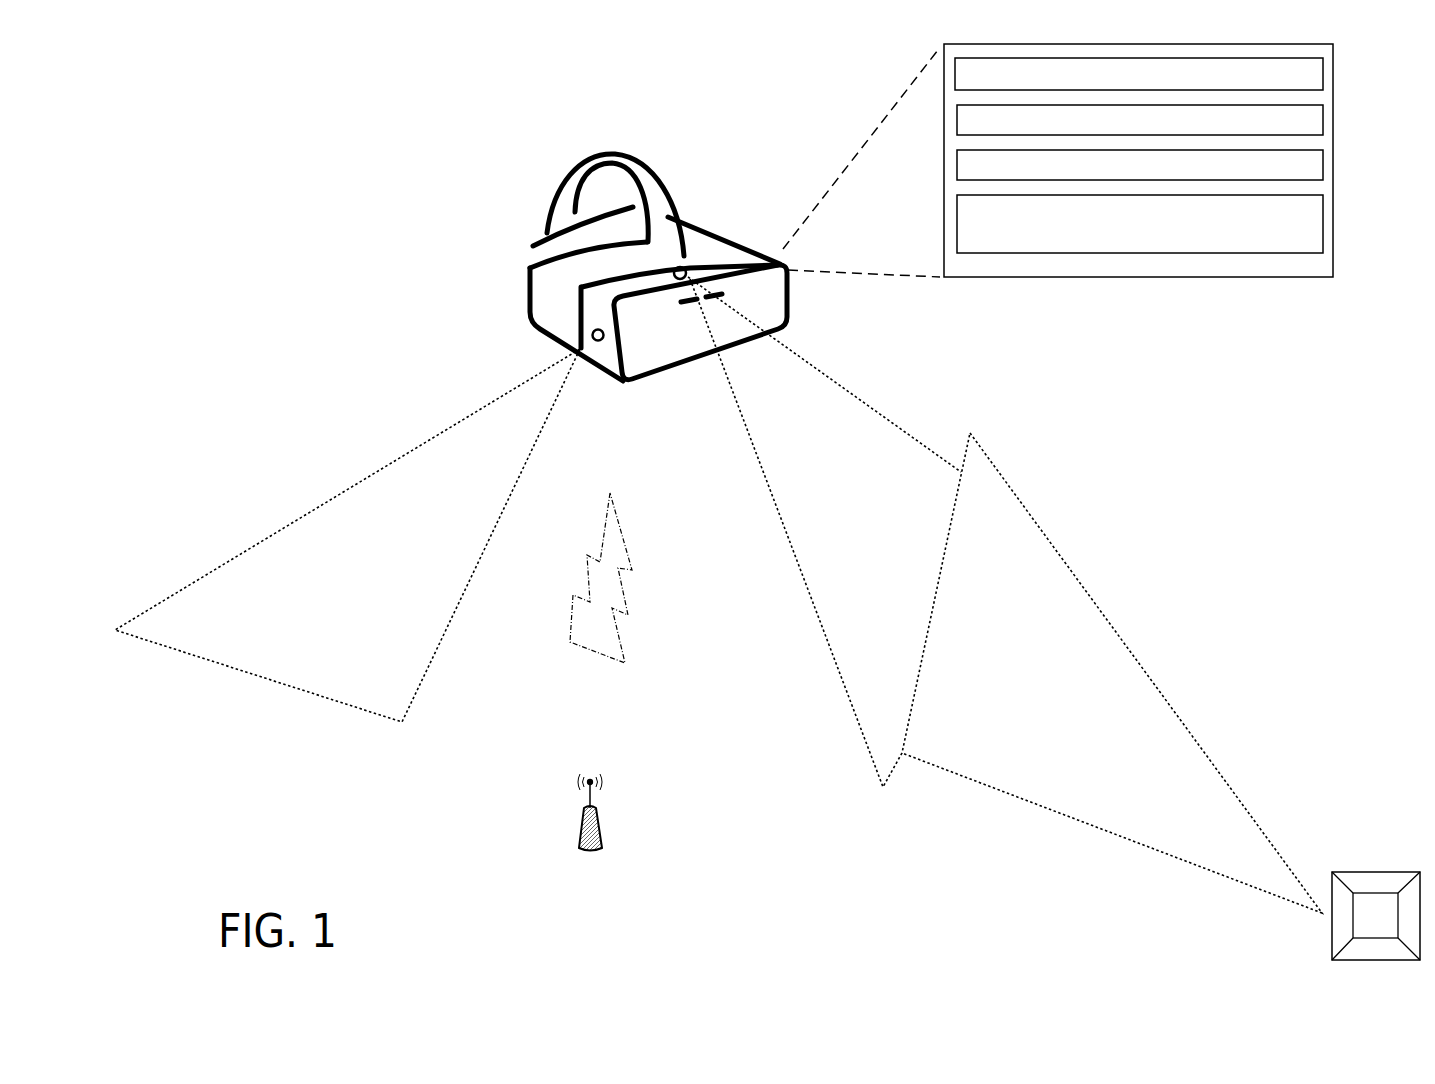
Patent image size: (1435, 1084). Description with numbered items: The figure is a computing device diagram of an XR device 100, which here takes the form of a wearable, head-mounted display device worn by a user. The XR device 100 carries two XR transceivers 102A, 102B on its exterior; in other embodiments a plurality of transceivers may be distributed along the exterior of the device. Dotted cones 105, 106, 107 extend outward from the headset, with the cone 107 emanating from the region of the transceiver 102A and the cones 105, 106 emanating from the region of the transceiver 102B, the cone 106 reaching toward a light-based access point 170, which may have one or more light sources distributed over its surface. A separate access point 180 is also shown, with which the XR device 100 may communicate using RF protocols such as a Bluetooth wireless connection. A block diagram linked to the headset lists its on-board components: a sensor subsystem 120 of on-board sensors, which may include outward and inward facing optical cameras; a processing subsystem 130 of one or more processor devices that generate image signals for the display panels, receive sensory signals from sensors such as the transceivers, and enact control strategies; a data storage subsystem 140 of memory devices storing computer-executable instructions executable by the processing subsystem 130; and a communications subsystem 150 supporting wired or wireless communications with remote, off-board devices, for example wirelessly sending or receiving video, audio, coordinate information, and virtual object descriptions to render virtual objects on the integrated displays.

The XR device 100 is at (749, 181).
The XR transceiver 102A is at (590, 345).
The XR transceiver 102B is at (692, 268).
The field of view 105 is at (848, 412).
The field of view 106 is at (1148, 699).
The field of view 107 is at (271, 649).
The sensor subsystem 120 is at (1282, 131).
The processing subsystem 130 is at (1139, 74).
The data storage subsystem 140 is at (1320, 176).
The communications subsystem 150 is at (1158, 249).
The light-based access point 170 is at (1376, 916).
The access point 180 is at (650, 747).